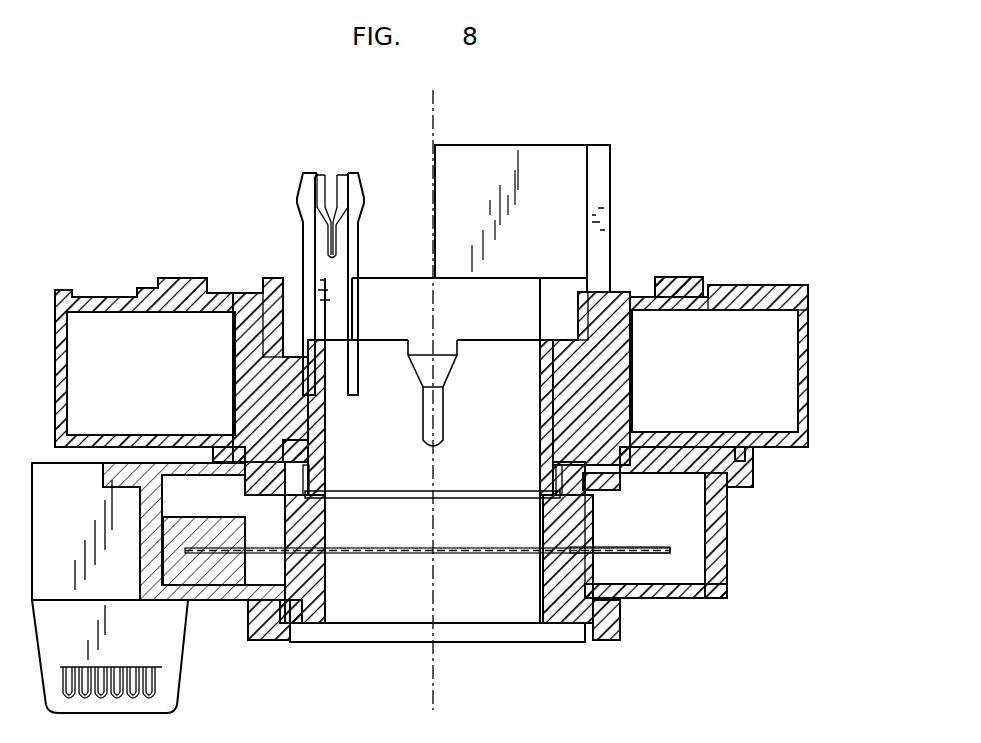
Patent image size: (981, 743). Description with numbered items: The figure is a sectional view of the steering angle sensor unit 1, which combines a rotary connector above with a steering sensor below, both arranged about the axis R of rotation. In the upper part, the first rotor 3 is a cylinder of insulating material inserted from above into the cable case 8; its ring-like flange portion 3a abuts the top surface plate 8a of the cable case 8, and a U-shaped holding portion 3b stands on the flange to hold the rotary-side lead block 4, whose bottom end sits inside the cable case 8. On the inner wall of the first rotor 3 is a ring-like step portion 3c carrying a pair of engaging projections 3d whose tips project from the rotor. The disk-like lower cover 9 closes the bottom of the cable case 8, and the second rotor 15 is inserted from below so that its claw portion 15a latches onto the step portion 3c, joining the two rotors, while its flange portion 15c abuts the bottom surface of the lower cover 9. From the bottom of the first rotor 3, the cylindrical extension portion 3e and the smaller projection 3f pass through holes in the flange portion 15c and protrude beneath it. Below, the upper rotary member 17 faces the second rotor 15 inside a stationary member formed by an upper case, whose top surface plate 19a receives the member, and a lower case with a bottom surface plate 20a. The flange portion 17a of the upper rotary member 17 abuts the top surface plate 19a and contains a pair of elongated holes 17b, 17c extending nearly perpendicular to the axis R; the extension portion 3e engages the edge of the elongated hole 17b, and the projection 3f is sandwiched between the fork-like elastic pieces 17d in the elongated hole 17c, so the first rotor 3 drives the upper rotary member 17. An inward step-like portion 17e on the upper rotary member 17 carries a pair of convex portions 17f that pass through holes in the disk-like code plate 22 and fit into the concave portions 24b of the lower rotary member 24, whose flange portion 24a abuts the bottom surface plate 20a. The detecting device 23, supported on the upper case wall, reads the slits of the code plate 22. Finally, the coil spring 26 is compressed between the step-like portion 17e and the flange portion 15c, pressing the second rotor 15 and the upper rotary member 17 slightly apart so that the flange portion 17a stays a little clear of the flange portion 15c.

The steering angle sensor unit 1 is at (158, 238).
The first rotor 3 is at (615, 360).
The flange portion 3a is at (680, 278).
The U-shaped holding portion 3b is at (600, 168).
The step portion 3c is at (580, 330).
The engaging projections 3d is at (300, 190).
The extension portion 3e is at (583, 450).
The projection 3f is at (300, 438).
The rotary-side lead block 4 is at (538, 165).
The cable case 8 is at (812, 358).
The top surface plate 8a is at (755, 290).
The lower cover 9 is at (800, 450).
The second rotor 15 is at (540, 415).
The claw portion 15a is at (305, 352).
The flange portion 15c is at (230, 437).
The upper rotary member 17 is at (525, 560).
The flange portion 17a is at (630, 468).
The elongated hole 17b is at (605, 492).
The elongated hole 17c is at (250, 480).
The elastic pieces 17d is at (165, 578).
The step-like portion 17e is at (545, 490).
The convex portions 17f is at (560, 600).
The top surface plate 19a is at (697, 550).
The bottom surface plate 20a is at (703, 600).
The code plate 22 is at (650, 600).
The detecting device 23 is at (175, 600).
The lower rotary member 24 is at (340, 620).
The flange portion 24a is at (608, 612).
The concave portions 24b is at (300, 620).
The coil spring 26 is at (330, 493).
The axis of rotation R is at (430, 125).